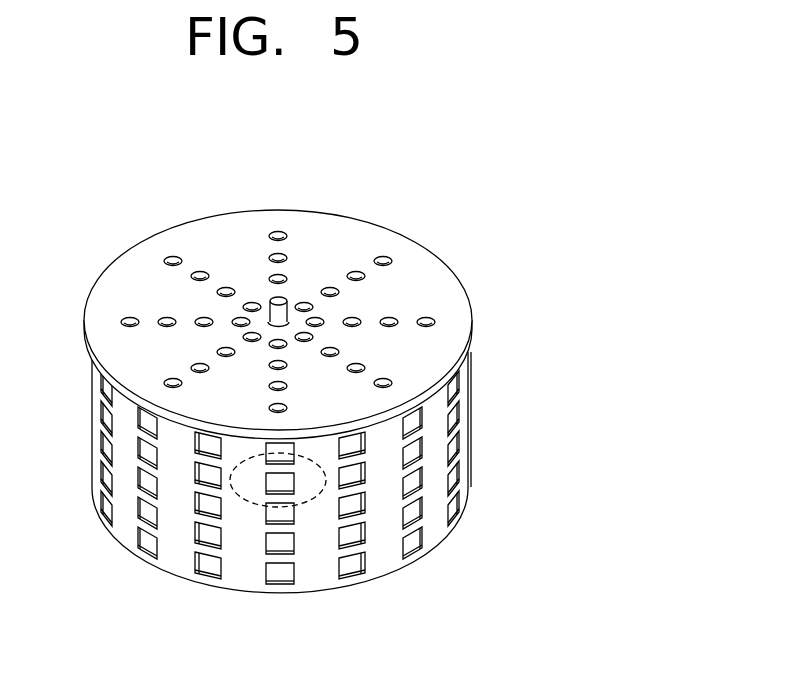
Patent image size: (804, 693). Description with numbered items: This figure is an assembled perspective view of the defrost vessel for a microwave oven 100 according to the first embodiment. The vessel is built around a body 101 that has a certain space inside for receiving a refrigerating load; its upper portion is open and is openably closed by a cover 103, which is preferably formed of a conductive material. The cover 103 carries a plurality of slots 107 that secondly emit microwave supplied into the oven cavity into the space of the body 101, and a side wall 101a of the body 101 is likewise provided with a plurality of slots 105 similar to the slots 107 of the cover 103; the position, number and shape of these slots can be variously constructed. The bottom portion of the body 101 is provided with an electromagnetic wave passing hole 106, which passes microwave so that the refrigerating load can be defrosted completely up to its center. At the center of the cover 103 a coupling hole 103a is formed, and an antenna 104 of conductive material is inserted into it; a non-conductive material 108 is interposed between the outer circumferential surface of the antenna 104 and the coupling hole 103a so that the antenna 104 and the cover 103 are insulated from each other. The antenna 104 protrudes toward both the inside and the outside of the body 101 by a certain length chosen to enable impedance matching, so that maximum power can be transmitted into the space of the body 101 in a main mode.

The defrost vessel for a microwave oven 100 is at (553, 262).
The body 101 is at (470, 393).
The side wall 101a is at (460, 440).
The cover 103 is at (405, 233).
The coupling hole 103a is at (250, 308).
The antenna 104 is at (275, 298).
The slot 105 is at (410, 482).
The electromagnetic wave passing hole 106 is at (302, 506).
The slot 107 is at (278, 232).
The non-conductive material 108 is at (289, 322).